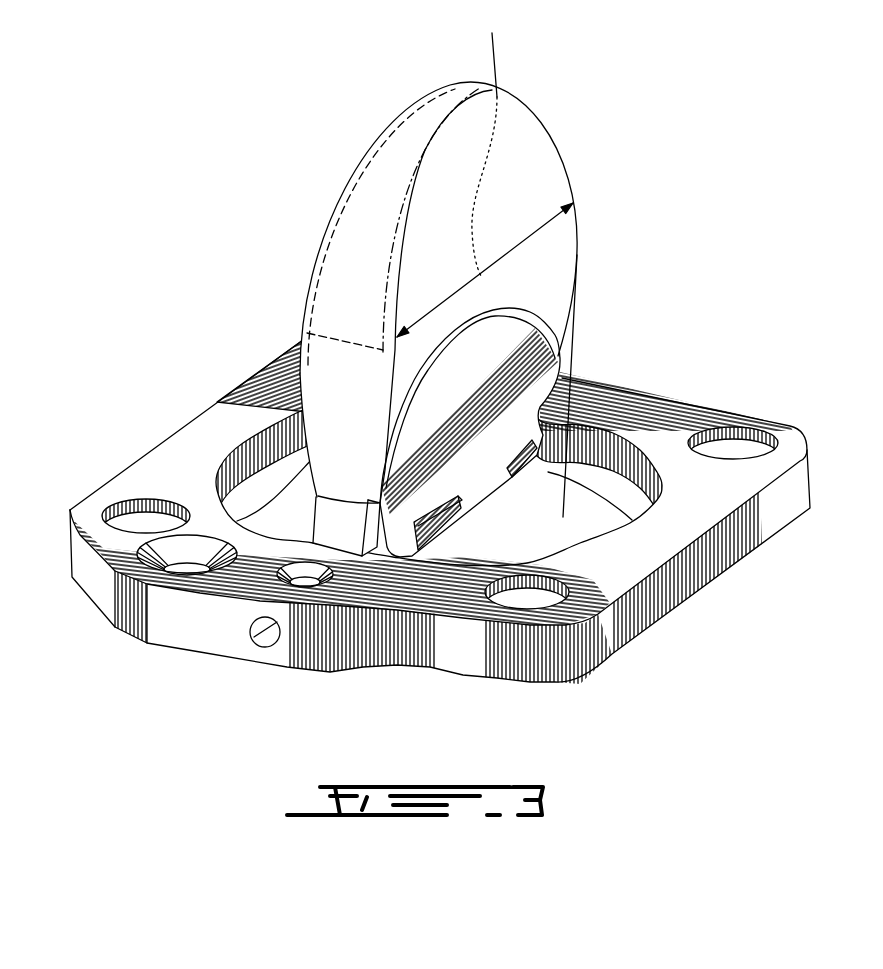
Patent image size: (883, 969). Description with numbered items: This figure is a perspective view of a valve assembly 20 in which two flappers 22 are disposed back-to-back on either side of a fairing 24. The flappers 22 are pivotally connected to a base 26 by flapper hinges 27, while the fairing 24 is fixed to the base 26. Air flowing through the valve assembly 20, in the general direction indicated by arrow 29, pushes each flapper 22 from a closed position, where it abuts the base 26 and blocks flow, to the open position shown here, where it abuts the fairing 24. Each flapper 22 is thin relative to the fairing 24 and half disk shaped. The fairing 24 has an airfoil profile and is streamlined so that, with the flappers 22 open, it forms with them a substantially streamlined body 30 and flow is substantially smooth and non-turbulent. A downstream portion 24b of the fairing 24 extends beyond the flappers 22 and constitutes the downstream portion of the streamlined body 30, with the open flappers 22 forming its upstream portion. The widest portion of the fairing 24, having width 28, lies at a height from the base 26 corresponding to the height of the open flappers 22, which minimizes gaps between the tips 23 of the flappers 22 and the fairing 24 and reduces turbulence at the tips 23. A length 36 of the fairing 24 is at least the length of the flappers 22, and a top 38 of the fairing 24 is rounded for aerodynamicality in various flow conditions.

The valve assembly 20 is at (462, 374).
The flapper 22 is at (560, 354).
The tip 23 is at (566, 318).
The fairing 24 is at (392, 282).
The downstream portion 24b is at (553, 135).
The base 26 is at (440, 515).
The flapper hinge 27 is at (452, 522).
The width 28 is at (237, 393).
The arrow 29 is at (613, 450).
The streamlined body 30 is at (515, 374).
The length 36 is at (489, 141).
The top 38 is at (437, 98).